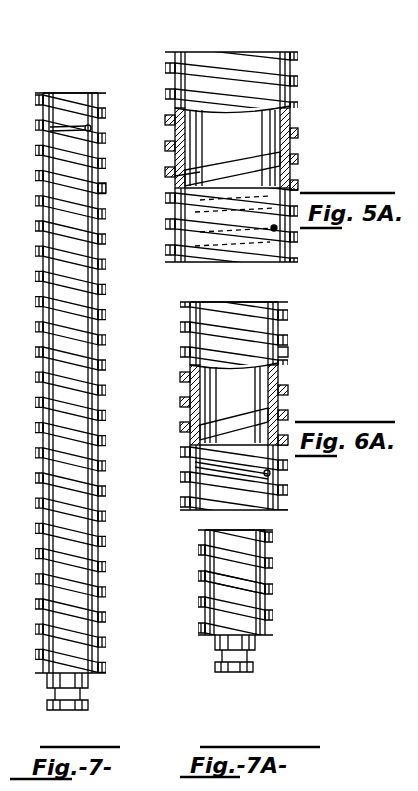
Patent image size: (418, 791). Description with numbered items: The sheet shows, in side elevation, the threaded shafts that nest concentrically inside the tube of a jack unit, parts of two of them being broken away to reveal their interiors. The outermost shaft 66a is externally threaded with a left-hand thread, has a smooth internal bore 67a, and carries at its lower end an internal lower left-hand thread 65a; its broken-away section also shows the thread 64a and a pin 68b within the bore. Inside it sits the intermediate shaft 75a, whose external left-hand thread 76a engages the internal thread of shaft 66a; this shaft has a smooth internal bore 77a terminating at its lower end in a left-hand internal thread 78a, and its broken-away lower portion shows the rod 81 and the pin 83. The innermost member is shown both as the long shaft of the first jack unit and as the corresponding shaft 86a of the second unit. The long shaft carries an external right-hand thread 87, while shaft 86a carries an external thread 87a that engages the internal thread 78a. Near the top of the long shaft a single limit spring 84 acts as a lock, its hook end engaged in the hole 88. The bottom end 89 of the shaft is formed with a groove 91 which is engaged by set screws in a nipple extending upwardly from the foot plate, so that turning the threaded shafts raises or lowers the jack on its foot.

In FIG. 5A, the helical thread of inner screw 64a is at (293, 162).
In FIG. 5A, the internal lower left-hand thread 65a is at (207, 173).
In FIG. 5A, the threaded shaft 66a is at (240, 41).
In FIG. 5A, the smooth internal bore 67a is at (245, 135).
In FIG. 5A, the pin 68b is at (272, 228).
In FIG. 6A, the threaded shaft 75a is at (272, 306).
In FIG. 6A, the external left-hand thread 76a is at (282, 353).
In FIG. 6A, the smooth internal bore 77a is at (215, 384).
In FIG. 6A, the left-hand internal thread 78a is at (222, 427).
In FIG. 6A, the rod 81 is at (220, 471).
In FIG. 6A, the pin 83 is at (283, 486).
In FIG. 7, the limit spring 84 is at (50, 129).
In FIG. 7, the shaft 86a is at (97, 76).
In FIG. 7A, the shaft 86a is at (255, 529).
In FIG. 7, the external right-hand thread 87 is at (100, 190).
In FIG. 7A, the external thread 87a is at (222, 576).
In FIG. 7, the hole 88 is at (91, 128).
In FIG. 7, the bottom end 89 is at (88, 677).
In FIG. 7A, the bottom end 89 is at (255, 643).
In FIG. 7, the groove 91 is at (72, 693).
In FIG. 7A, the groove 91 is at (250, 663).